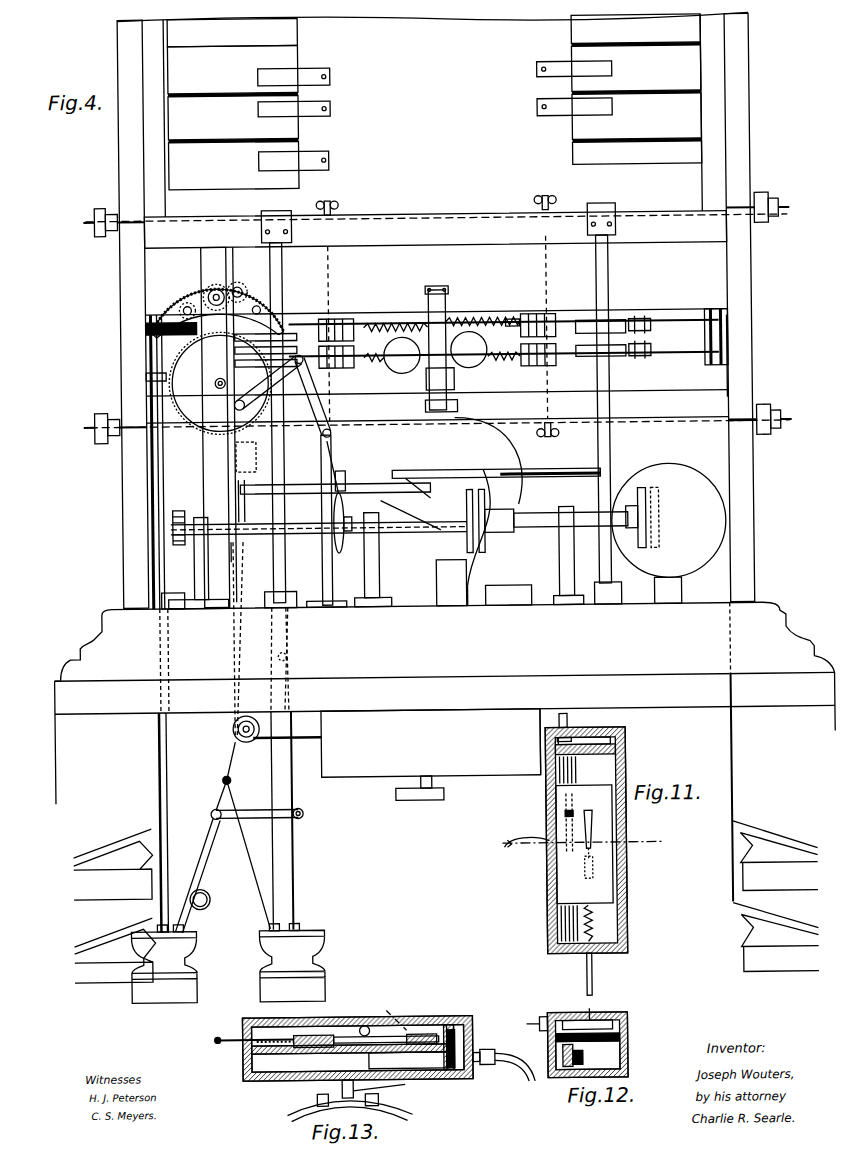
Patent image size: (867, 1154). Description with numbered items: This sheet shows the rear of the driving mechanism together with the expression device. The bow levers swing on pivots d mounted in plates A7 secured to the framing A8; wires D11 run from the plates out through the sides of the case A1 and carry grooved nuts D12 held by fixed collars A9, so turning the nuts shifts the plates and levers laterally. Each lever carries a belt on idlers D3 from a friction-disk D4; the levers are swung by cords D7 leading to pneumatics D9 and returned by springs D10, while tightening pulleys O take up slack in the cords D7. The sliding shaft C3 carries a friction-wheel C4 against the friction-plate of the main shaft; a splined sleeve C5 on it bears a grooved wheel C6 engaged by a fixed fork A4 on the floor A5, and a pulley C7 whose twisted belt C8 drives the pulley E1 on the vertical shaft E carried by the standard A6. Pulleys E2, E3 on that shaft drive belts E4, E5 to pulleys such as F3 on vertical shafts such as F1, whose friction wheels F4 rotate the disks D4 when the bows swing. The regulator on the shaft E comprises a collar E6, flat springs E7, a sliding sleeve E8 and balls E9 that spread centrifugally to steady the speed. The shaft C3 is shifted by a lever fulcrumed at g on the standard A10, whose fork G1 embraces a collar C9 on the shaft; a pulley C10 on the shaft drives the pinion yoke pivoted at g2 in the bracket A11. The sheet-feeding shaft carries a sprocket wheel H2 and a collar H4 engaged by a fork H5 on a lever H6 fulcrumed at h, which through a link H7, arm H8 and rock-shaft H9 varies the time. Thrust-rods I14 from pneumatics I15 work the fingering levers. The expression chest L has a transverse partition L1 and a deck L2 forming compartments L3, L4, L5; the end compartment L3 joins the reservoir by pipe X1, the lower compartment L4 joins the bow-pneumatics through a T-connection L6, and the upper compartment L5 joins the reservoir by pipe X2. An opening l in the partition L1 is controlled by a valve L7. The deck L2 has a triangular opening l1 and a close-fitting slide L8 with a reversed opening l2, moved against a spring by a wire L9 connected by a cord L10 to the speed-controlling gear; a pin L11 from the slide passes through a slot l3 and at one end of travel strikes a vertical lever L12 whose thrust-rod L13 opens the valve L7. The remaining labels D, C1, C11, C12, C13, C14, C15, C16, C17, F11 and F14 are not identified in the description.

In FIG. 4, the thrust-rods I14 is at (336, 78).
In FIG. 4, the pneumatics I15 is at (434, 102).
In FIG. 4, the framing A8 is at (436, 317).
In FIG. 4, the plates A7 is at (342, 205).
In FIG. 4, the fixed collars A9 is at (780, 430).
In FIG. 4, the pivot or fulcrum d is at (332, 272).
In FIG. 4, the wires D11 is at (96, 216).
In FIG. 4, the nuts D12 is at (106, 230).
In FIG. 4, the friction wheels F4 is at (284, 300).
In FIG. 4, the vertical shaft F1 is at (610, 280).
In FIG. 4, the pulley F3 is at (608, 474).
In FIG. 4, the disc F14 is at (618, 322).
In FIG. 4, the shaft pedestal F11 is at (568, 536).
In FIG. 4, the case A1 is at (150, 324).
In FIG. 4, the vertical bracket A11 is at (221, 376).
In FIG. 4, the standard A10 is at (364, 570).
In FIG. 4, the fixed fork or yoke A4 is at (445, 580).
In FIG. 4, the floor A5 is at (682, 600).
In FIG. 4, the vertical bracket or standard A6 is at (500, 580).
In FIG. 4, the lever C1 is at (329, 432).
In FIG. 4, the horizontal shaft C3 is at (147, 376).
In FIG. 4, the friction-wheel C4 is at (188, 300).
In FIG. 4, the sleeve C5 is at (200, 290).
In FIG. 4, the wheel C6 is at (160, 330).
In FIG. 4, the pulley C7 is at (486, 536).
In FIG. 4, the twisted belt C8 is at (319, 540).
In FIG. 4, the collar C9 is at (347, 537).
In FIG. 4, the pulley C10 is at (236, 280).
In FIG. 4, the lever C11 is at (318, 424).
In FIG. 4, the gear wheel C12 is at (310, 846).
In FIG. 4, the pedal C13 is at (190, 940).
In FIG. 4, the pawl C14 is at (236, 450).
In FIG. 4, the pinion C15 is at (246, 284).
In FIG. 4, the pivot C16 is at (220, 776).
In FIG. 4, the rod C17 is at (154, 736).
In FIG. 4, the fulcrum g is at (334, 436).
In FIG. 4, the pivot g2 is at (218, 282).
In FIG. 4, the fork G1 is at (349, 477).
In FIG. 4, the spool D is at (340, 318).
In FIG. 4, the idlers D3 is at (714, 312).
In FIG. 4, the friction-disk D4 is at (300, 332).
In FIG. 4, the cords D7 is at (134, 768).
In FIG. 4, the pneumatics D9 is at (100, 850).
In FIG. 4, the springs D10 is at (510, 320).
In FIG. 4, the vertical shaft E is at (436, 290).
In FIG. 4, the pulley E1 is at (408, 510).
In FIG. 4, the pulley E2 is at (424, 480).
In FIG. 4, the pulley E3 is at (476, 478).
In FIG. 4, the horizontal belt E4 is at (400, 483).
In FIG. 4, the horizontal belt E5 is at (548, 476).
In FIG. 4, the collar E6 is at (448, 290).
In FIG. 4, the flat springs E7 is at (386, 322).
In FIG. 4, the sleeve E8 is at (456, 406).
In FIG. 4, the balls or weights E9 is at (496, 348).
In FIG. 4, the tightening pulleys O is at (644, 320).
In FIG. 4, the sprocket wheel H2 is at (170, 510).
In FIG. 4, the collar H4 is at (246, 501).
In FIG. 4, the fork H5 is at (250, 662).
In FIG. 4, the lever H6 is at (268, 576).
In FIG. 4, the link H7 is at (257, 799).
In FIG. 4, the arm H8 is at (198, 846).
In FIG. 4, the rock-shaft H9 is at (206, 896).
In FIG. 4, the fulcrum h is at (286, 656).
In FIG. 4, the rectangular chest L is at (431, 743).
In FIG. 11, the rectangular chest L is at (624, 892).
In FIG. 12, the rectangular chest L is at (622, 1034).
In FIG. 13, the rectangular chest L is at (412, 1020).
In FIG. 11, the transverse partition L1 is at (622, 750).
In FIG. 13, the transverse partition L1 is at (446, 1028).
In FIG. 11, the horizontal deck or partition L2 is at (608, 928).
In FIG. 12, the horizontal deck or partition L2 is at (616, 1046).
In FIG. 13, the horizontal deck or partition L2 is at (266, 1052).
In FIG. 11, the end compartment L3 is at (620, 732).
In FIG. 12, the lower compartment L4 is at (614, 1064).
In FIG. 13, the lower compartment L4 is at (245, 1062).
In FIG. 12, the upper compartment L5 is at (620, 1020).
In FIG. 13, the upper compartment L5 is at (262, 1028).
In FIG. 4, the T-connection L6 is at (420, 800).
In FIG. 13, the T-connection L6 is at (386, 1085).
In FIG. 11, the valve L7 is at (566, 736).
In FIG. 13, the valve L7 is at (466, 1038).
In FIG. 11, the slide L8 is at (604, 880).
In FIG. 4, the wire L9 is at (310, 738).
In FIG. 11, the wire L9 is at (588, 978).
In FIG. 13, the wire L9 is at (242, 1033).
In FIG. 4, the cord L10 is at (246, 760).
In FIG. 11, the pin L11 is at (560, 816).
In FIG. 13, the pin L11 is at (392, 1046).
In FIG. 13, the vertical lever L12 is at (356, 1044).
In FIG. 13, the thrust-rod L13 is at (448, 1068).
In FIG. 13, the opening l is at (312, 1048).
In FIG. 11, the triangular opening l1 is at (588, 830).
In FIG. 12, the triangular opening l1 is at (596, 1037).
In FIG. 11, the reversed opening l2 is at (588, 812).
In FIG. 13, the reversed opening l2 is at (360, 1024).
In FIG. 11, the long slot l3 is at (562, 808).
In FIG. 11, the pipe X1 is at (549, 741).
In FIG. 13, the pipe X1 is at (510, 1066).
In FIG. 11, the pipe X2 is at (588, 856).
In FIG. 12, the pipe X2 is at (530, 1010).
In FIG. 13, the pipe X2 is at (398, 1008).